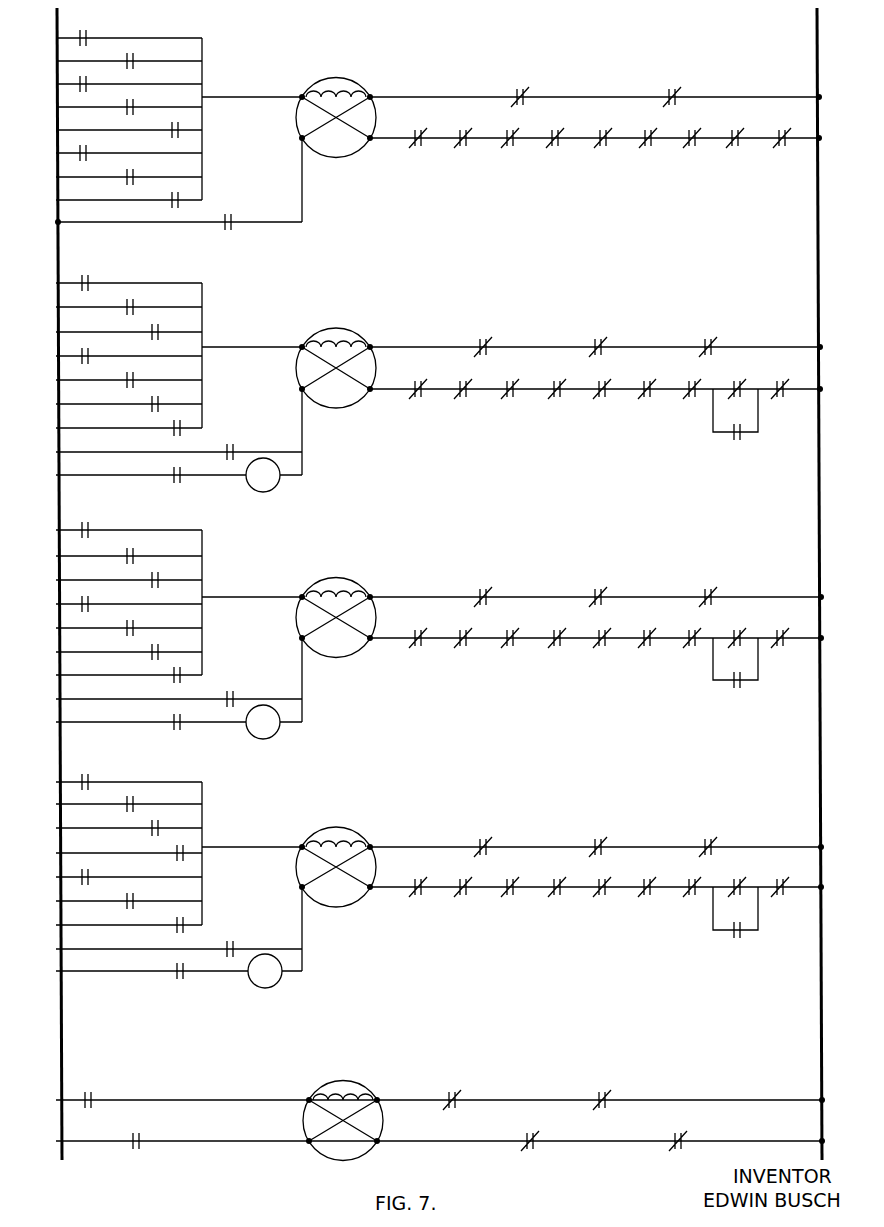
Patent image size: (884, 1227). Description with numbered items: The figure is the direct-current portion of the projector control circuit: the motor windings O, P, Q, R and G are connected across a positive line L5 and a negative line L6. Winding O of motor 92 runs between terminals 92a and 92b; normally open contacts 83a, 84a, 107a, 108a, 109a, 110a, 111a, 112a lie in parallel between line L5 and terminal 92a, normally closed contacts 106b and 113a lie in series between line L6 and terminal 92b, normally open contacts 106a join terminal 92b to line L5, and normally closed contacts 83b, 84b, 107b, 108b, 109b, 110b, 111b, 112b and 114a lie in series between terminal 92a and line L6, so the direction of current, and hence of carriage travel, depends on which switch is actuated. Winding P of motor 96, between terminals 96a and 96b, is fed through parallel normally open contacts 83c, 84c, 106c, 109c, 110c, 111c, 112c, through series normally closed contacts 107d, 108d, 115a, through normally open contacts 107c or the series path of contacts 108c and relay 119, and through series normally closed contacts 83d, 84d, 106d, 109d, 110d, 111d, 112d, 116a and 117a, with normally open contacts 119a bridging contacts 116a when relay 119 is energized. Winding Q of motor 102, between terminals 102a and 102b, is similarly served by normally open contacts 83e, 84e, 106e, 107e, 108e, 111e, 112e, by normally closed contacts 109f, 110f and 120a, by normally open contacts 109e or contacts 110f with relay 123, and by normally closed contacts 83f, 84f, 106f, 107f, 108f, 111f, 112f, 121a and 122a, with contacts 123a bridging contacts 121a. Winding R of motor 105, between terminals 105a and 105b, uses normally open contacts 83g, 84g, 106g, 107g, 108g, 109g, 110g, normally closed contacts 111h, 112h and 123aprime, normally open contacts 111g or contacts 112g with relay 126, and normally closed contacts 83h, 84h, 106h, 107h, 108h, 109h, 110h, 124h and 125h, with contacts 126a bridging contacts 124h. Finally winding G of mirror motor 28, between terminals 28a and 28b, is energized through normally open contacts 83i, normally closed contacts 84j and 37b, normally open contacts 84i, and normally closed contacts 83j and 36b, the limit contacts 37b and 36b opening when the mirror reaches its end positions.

The positive line L5 is at (54, 29).
The negative line L6 is at (818, 51).
The armature winding O is at (315, 88).
The motor 92 is at (345, 76).
The winding terminal 92a is at (302, 96).
The winding terminal 92b is at (368, 96).
The normally open contacts 83a is at (87, 31).
The normally open contacts 84a is at (132, 53).
The normally open contacts 107a is at (76, 80).
The normally open contacts 108a is at (130, 112).
The normally open contacts 109a is at (175, 122).
The normally open contacts 110a is at (83, 148).
The normally open contacts 111a is at (130, 186).
The normally open contacts 112a is at (177, 194).
The normally open contacts 106a is at (228, 242).
The normally closed contacts 106b is at (518, 90).
The normally closed contacts 113a is at (670, 90).
The normally closed contacts 83b is at (418, 146).
The normally closed contacts 84b is at (465, 148).
The normally closed contacts 107b is at (512, 148).
The normally closed contacts 108b is at (556, 146).
The normally closed contacts 109b is at (606, 129).
The normally closed contacts 110b is at (650, 147).
The normally closed contacts 111b is at (692, 129).
The normally closed contacts 112b is at (737, 147).
The normally closed contacts 114a is at (785, 118).
The armature winding P is at (321, 343).
The motor 96 is at (344, 328).
The winding terminal 96a is at (299, 346).
The winding terminal 96b is at (370, 348).
The relay 119 is at (275, 492).
The normally open contacts 83c is at (84, 274).
The normally open contacts 84c is at (130, 300).
The normally open contacts 106c is at (157, 323).
The normally open contacts 109c is at (88, 347).
The normally open contacts 110c is at (132, 385).
The normally open contacts 111c is at (146, 408).
The normally open contacts 112c is at (174, 435).
The normally open contacts 107c is at (230, 444).
The normally open contacts 108c is at (177, 483).
The normally closed contacts 107d is at (482, 338).
The normally closed contacts 108d is at (598, 337).
The normally closed contacts 115a is at (708, 337).
The normally closed contacts 83d is at (419, 397).
The normally closed contacts 84d is at (464, 398).
The normally closed contacts 106d is at (510, 398).
The normally closed contacts 109d is at (558, 384).
The normally closed contacts 110d is at (601, 400).
The normally closed contacts 111d is at (644, 378).
The normally closed contacts 112d is at (694, 399).
The normally closed contacts 116a is at (736, 378).
The normally closed contacts 117a is at (781, 402).
The normally open contacts 119a is at (738, 442).
The armature winding Q is at (318, 588).
The motor 102 is at (342, 578).
The winding terminal 102a is at (299, 596).
The winding terminal 102b is at (370, 596).
The relay 123 is at (278, 734).
The normally open contacts 83e is at (87, 522).
The normally open contacts 84e is at (130, 553).
The normally open contacts 106e is at (159, 573).
The normally open contacts 107e is at (90, 595).
The normally open contacts 108e is at (132, 627).
The normally open contacts 111e is at (150, 657).
The normally open contacts 112e is at (172, 682).
The normally open contacts 109e is at (232, 692).
The normally closed contacts 110f is at (177, 724).
The normally closed contacts 109f is at (482, 588).
The normally closed contacts 120a is at (712, 587).
The normally closed contacts 83f is at (418, 651).
The normally closed contacts 84f is at (464, 646).
The normally closed contacts 106f is at (510, 645).
The normally closed contacts 107f is at (558, 630).
The normally closed contacts 108f is at (603, 646).
The normally closed contacts 111f is at (646, 628).
The normally closed contacts 112f is at (694, 646).
The normally closed contacts 121a is at (736, 624).
The normally closed contacts 122a is at (781, 646).
The normally open contacts 123a is at (738, 688).
The armature winding R is at (318, 842).
The motor 105 is at (344, 828).
The winding terminal 105a is at (302, 840).
The winding terminal 105b is at (370, 846).
The relay 126 is at (278, 986).
The normally open contacts 83g is at (85, 774).
The normally open contacts 84g is at (130, 796).
The normally open contacts 106g is at (155, 830).
The normally open contacts 107g is at (182, 855).
The normally open contacts 108g is at (84, 885).
The normally open contacts 109g is at (128, 908).
The normally open contacts 110g is at (174, 932).
The normally open contacts 111g is at (232, 942).
The normally open contacts 112g is at (181, 979).
The normally closed contacts 111h is at (484, 838).
The normally closed contacts 112h is at (598, 837).
The normally closed contacts 123aprime is at (712, 837).
The normally closed contacts 83h is at (419, 897).
The normally closed contacts 84h is at (464, 895).
The normally closed contacts 106h is at (510, 895).
The normally closed contacts 107h is at (558, 878).
The normally closed contacts 108h is at (603, 895).
The normally closed contacts 109h is at (647, 880).
The normally closed contacts 110h is at (694, 896).
The normally closed contacts 124h is at (736, 875).
The normally closed contacts 125h is at (781, 896).
The normally open contacts 126a is at (735, 938).
The winding G is at (322, 1094).
The mirror motor 28 is at (353, 1078).
The winding terminal 28a is at (308, 1094).
The winding terminal 28b is at (377, 1098).
The normally open contacts 83i is at (86, 1091).
The normally open contacts 84i is at (136, 1149).
The normally closed contacts 84j is at (449, 1090).
The normally closed contacts 37b is at (599, 1090).
The normally closed contacts 83j is at (530, 1149).
The normally closed contacts 36b is at (678, 1149).